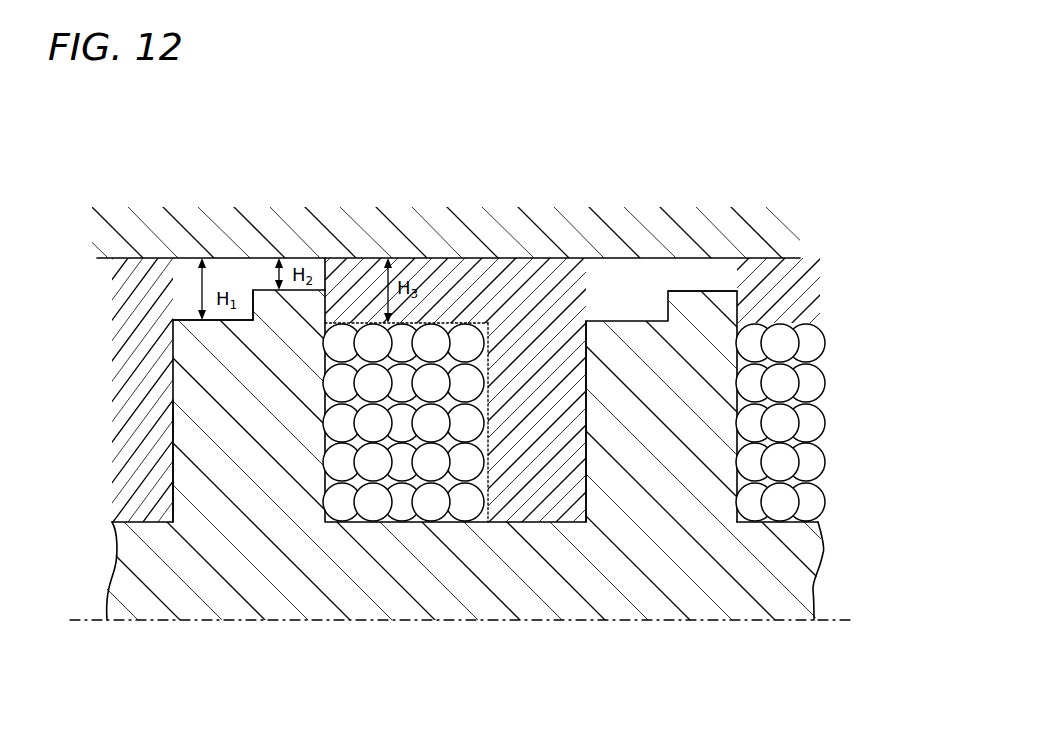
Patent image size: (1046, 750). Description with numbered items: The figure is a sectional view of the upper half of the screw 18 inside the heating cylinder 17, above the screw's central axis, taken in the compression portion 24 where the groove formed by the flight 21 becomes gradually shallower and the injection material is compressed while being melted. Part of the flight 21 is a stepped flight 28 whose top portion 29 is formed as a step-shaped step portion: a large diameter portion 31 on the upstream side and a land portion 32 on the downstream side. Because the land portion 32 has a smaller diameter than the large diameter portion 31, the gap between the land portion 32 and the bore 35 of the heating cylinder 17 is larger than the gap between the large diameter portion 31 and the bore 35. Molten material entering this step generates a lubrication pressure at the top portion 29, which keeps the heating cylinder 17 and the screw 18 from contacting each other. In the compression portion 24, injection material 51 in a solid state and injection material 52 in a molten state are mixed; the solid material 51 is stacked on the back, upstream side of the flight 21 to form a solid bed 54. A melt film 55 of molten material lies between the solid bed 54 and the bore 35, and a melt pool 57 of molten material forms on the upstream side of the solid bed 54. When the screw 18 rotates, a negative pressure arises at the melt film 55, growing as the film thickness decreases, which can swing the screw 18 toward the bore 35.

The heating cylinder 17 is at (582, 225).
The screw 18 is at (203, 560).
The flight 21 is at (173, 378).
The compression portion 24 is at (285, 108).
The stepped flight 28 is at (173, 432).
The top portion 29 is at (252, 262).
The large diameter portion 31 is at (323, 292).
The land portion 32 is at (173, 320).
The bore 35 is at (651, 258).
The injection material in a solid state 51 is at (405, 515).
The injection material in a molten state 52 is at (553, 507).
The solid bed 54 is at (368, 462).
The melt film 55 is at (437, 279).
The melt pool 57 is at (550, 403).